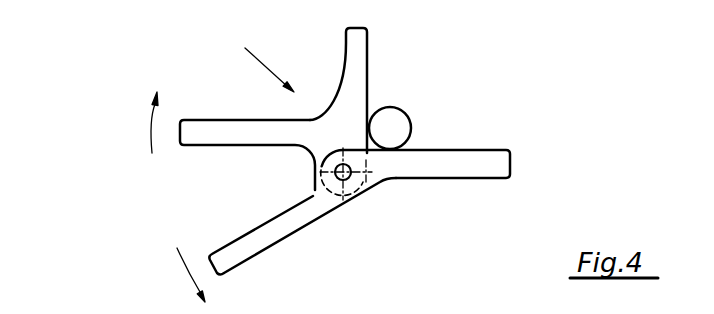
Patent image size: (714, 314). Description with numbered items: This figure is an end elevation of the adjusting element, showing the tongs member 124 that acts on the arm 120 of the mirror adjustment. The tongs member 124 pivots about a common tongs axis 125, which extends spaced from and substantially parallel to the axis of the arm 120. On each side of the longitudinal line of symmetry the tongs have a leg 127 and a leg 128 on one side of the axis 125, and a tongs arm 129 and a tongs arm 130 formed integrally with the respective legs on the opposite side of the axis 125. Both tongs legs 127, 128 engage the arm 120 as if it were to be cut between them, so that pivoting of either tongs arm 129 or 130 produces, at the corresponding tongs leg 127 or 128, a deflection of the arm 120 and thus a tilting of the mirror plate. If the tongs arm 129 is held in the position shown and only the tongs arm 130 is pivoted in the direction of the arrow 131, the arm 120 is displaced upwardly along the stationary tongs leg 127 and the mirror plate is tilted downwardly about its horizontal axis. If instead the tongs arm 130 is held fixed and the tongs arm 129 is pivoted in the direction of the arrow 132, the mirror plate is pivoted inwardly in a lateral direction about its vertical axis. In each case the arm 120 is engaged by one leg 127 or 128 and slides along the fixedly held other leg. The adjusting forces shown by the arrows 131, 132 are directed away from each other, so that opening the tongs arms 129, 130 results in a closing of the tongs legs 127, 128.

The arm 120 is at (404, 112).
The tongs member 124 is at (263, 59).
The common tongs axis 125 is at (345, 174).
The tongs leg 127 is at (358, 62).
The tongs leg 128 is at (492, 165).
The tongs arm 129 is at (232, 128).
The tongs arm 130 is at (240, 254).
The arrow 131 is at (178, 256).
The arrow 132 is at (150, 133).